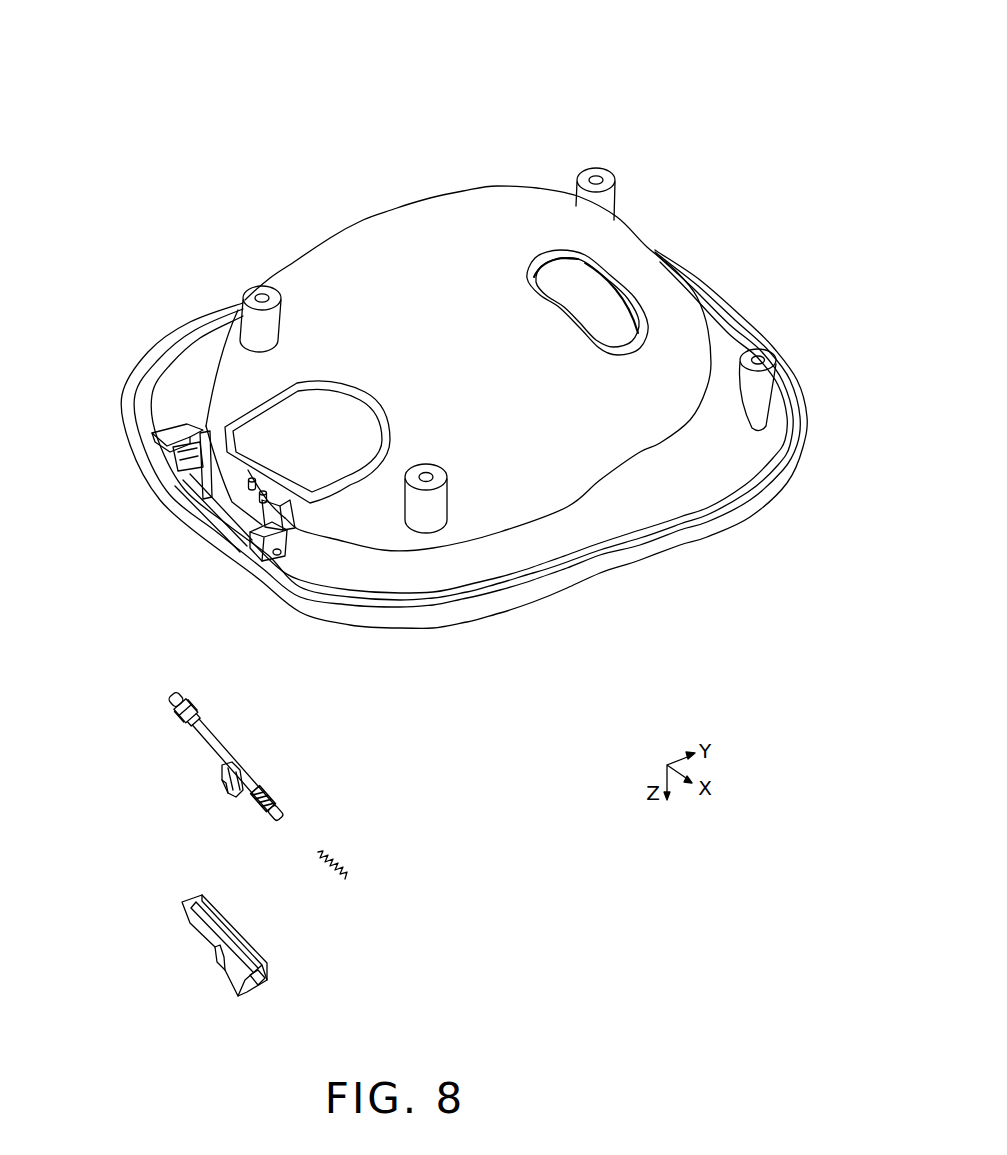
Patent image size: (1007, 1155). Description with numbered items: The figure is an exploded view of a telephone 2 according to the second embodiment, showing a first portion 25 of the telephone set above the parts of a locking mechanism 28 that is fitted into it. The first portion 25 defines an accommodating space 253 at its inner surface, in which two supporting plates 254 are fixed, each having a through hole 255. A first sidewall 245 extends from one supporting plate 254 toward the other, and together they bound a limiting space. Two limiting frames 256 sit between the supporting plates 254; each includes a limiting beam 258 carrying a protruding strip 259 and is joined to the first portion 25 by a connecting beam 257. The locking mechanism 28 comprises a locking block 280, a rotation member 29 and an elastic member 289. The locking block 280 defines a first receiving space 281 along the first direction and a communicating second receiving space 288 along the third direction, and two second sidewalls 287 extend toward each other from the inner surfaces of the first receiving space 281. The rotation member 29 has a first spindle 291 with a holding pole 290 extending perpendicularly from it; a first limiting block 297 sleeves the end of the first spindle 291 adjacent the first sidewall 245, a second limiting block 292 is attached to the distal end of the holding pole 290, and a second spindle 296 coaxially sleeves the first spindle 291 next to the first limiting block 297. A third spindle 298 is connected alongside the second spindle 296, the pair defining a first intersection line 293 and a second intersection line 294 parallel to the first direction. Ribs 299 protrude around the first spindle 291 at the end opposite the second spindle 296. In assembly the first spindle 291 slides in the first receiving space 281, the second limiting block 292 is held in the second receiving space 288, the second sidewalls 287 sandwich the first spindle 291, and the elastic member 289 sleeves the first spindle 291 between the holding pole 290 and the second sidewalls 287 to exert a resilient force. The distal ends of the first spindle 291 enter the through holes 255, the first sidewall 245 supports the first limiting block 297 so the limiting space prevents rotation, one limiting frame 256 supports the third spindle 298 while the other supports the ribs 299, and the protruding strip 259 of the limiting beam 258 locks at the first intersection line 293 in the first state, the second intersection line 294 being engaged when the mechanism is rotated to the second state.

The telephone 2 is at (445, 62).
The first portion 25 is at (392, 212).
The accommodating space 253 is at (228, 502).
The supporting plate 254 is at (158, 443).
The through hole 255 is at (191, 440).
The first sidewall 245 is at (158, 438).
The limiting frame 256 is at (87, 524).
The holding post 257 is at (192, 478).
The limiting beam 258 is at (183, 463).
The protruding strip 259 is at (198, 497).
The locking mechanism 28 is at (262, 803).
The rotation member 29 is at (237, 757).
The first spindle 291 is at (173, 694).
The first limiting block 297 is at (181, 709).
The first intersection line 293 is at (186, 717).
The second spindle 296 is at (184, 722).
The holding pole 290 is at (220, 770).
The second limiting block 292 is at (223, 792).
The third spindle 298 is at (193, 703).
The second intersection line 294 is at (199, 713).
The ribs 299 is at (278, 797).
The elastic member 289 is at (341, 866).
The locking block 280 is at (230, 949).
The first receiving space 281 is at (210, 917).
The second receiving space 288 is at (220, 966).
The second sidewall 287 is at (258, 980).